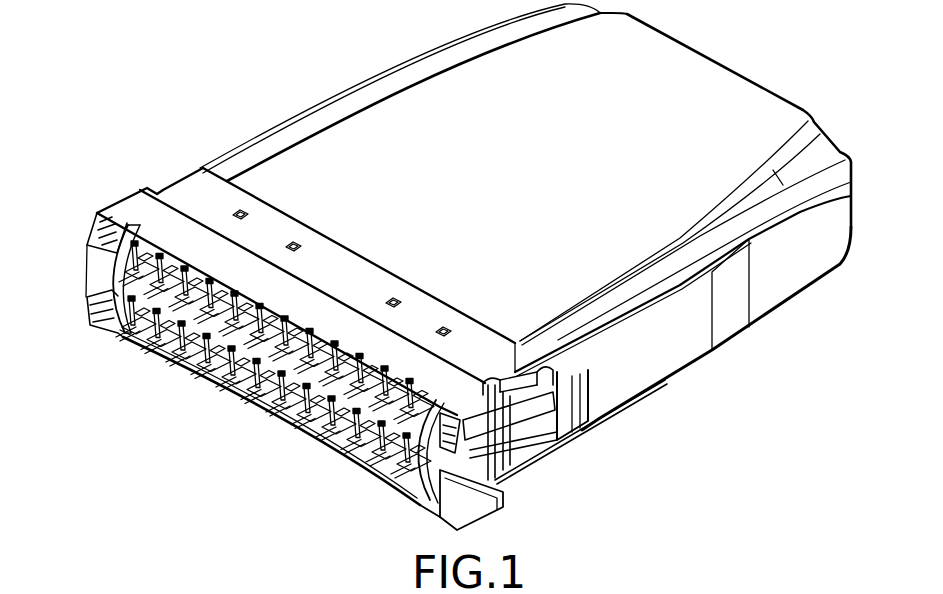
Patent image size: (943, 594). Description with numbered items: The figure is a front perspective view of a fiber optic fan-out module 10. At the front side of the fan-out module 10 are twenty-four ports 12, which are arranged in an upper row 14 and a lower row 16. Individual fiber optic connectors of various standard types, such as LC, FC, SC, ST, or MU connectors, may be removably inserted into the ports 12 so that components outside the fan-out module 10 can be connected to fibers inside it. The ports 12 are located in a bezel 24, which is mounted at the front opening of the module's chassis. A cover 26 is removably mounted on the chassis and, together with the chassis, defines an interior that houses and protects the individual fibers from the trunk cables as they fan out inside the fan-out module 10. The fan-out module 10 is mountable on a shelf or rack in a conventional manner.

The fiber optic fan-out module 10 is at (287, 98).
The ports 12 is at (140, 262).
The upper row 14 is at (400, 392).
The lower row 16 is at (390, 483).
The bezel 24 is at (190, 200).
The cover 26 is at (703, 78).